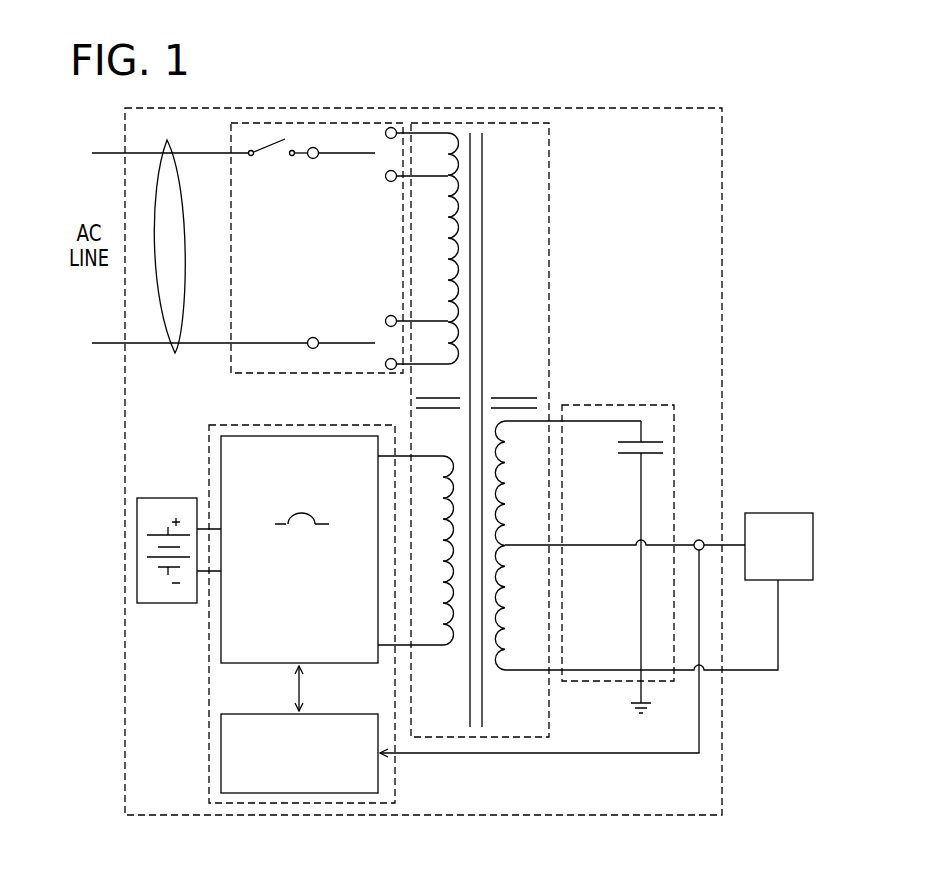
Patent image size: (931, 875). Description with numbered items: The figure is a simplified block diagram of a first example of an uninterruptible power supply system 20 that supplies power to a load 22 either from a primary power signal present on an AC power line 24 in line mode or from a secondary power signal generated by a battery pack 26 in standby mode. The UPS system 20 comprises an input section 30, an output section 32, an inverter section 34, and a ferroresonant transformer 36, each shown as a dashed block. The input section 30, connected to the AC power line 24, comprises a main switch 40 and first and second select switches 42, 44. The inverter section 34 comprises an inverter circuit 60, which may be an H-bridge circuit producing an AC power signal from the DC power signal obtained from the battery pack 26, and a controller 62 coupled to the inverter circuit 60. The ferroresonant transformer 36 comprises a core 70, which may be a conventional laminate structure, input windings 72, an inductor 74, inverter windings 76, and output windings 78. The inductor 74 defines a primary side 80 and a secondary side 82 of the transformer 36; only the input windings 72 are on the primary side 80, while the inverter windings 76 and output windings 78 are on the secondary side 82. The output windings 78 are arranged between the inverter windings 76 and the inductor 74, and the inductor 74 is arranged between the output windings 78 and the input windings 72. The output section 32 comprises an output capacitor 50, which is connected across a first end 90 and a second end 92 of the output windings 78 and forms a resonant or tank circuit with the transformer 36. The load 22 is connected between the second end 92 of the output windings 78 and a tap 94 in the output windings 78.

The uninterruptible power supply system 20 is at (712, 240).
The load 22 is at (775, 520).
The AC power line 24 is at (172, 356).
The battery pack 26 is at (165, 503).
The input section 30 is at (255, 370).
The output section 32 is at (630, 410).
The inverter section 34 is at (212, 437).
The ferroresonant transformer 36 is at (535, 430).
The main switch 40 is at (278, 172).
The first select switch 42 is at (375, 176).
The second select switch 44 is at (365, 320).
The output capacitor 50 is at (628, 460).
The inverter circuit 60 is at (333, 653).
The controller 62 is at (250, 722).
The core 70 is at (485, 258).
The input windings 72 is at (441, 248).
The inductor 74 is at (500, 387).
The inverter windings 76 is at (448, 650).
The output windings 78 is at (503, 675).
The primary side 80 is at (558, 190).
The secondary side 82 is at (557, 712).
The first end of the output windings 90 is at (527, 423).
The second end of the output windings 92 is at (522, 668).
The tap 94 is at (527, 547).